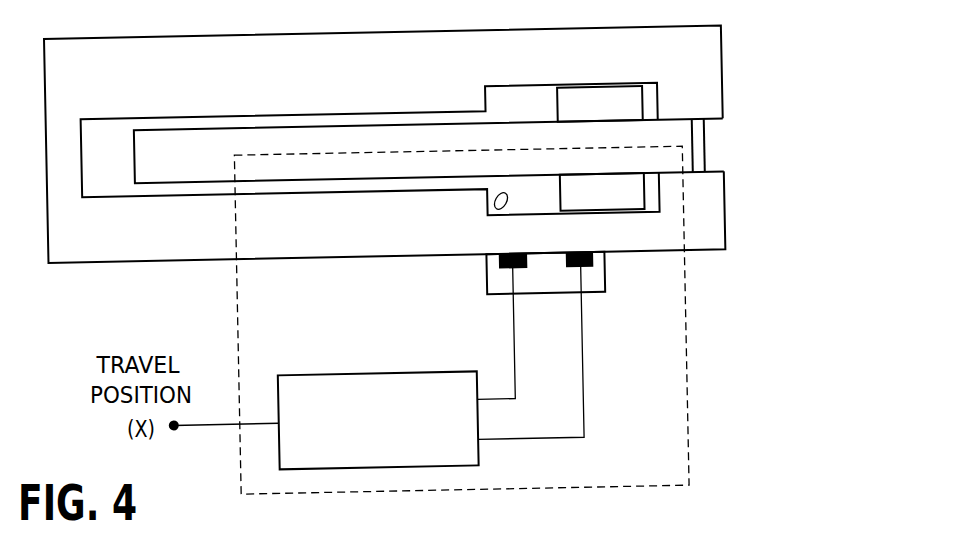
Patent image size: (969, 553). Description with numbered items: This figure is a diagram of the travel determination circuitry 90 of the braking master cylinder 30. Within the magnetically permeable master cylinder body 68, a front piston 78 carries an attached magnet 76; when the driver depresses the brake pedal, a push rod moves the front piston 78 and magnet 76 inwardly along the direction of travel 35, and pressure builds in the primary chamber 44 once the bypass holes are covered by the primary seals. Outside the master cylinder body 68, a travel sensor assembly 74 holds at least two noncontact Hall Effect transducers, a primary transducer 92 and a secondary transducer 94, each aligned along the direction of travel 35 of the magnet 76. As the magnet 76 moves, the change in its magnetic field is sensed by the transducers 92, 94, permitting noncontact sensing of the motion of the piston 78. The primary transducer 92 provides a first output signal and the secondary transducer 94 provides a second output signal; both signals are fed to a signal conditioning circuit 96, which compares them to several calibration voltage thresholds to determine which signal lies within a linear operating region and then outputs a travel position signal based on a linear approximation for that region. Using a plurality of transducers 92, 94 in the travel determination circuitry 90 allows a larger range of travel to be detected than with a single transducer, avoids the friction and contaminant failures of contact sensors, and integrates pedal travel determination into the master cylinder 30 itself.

The braking master cylinder 30 is at (776, 71).
The direction of travel 35 is at (716, 146).
The primary chamber 44 is at (505, 196).
The master cylinder body 68 is at (277, 260).
The travel sensor assembly 74 is at (603, 278).
The magnet 76 is at (647, 197).
The front piston 78 is at (302, 180).
The travel determination circuitry 90 is at (687, 355).
The primary transducer 92 is at (583, 267).
The secondary transducer 94 is at (507, 270).
The signal conditioning circuit 96 is at (350, 373).